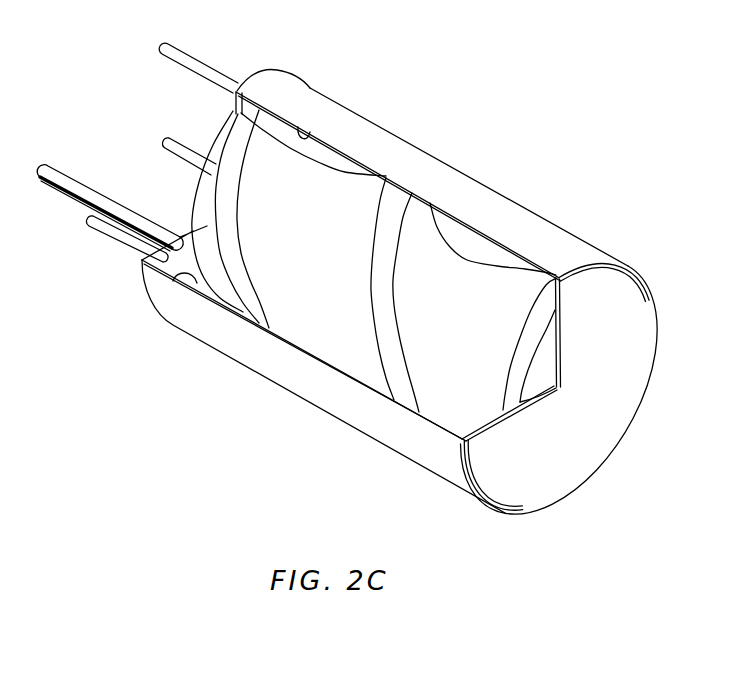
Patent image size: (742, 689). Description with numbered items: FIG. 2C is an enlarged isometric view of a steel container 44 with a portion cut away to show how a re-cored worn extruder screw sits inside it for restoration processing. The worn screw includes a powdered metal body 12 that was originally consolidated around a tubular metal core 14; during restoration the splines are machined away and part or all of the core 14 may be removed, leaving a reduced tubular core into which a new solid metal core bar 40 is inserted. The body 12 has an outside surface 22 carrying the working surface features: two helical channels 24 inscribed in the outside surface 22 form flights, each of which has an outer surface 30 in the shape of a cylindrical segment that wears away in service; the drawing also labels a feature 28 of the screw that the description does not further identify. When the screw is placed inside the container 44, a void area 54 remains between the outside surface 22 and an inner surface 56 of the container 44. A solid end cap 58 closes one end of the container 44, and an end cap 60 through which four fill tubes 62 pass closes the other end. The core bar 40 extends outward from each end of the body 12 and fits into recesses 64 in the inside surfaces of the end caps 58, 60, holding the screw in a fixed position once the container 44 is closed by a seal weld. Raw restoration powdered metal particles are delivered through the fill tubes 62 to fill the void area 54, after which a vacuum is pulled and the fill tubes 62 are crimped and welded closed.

The powdered metal body 12 is at (372, 193).
The tubular metal core 14 is at (543, 343).
The outside surface 22 is at (492, 283).
The helical channels 24 is at (293, 324).
The disc 28 is at (238, 230).
The outer surface 30 is at (231, 175).
The core bar 40 is at (547, 368).
The container 44 is at (587, 239).
The void area 54 is at (303, 128).
The inner surface 56 is at (310, 88).
The solid end cap 58 is at (592, 469).
The end cap 60 is at (182, 232).
The fill tubes 62 is at (207, 82).
The recesses 64 is at (556, 388).